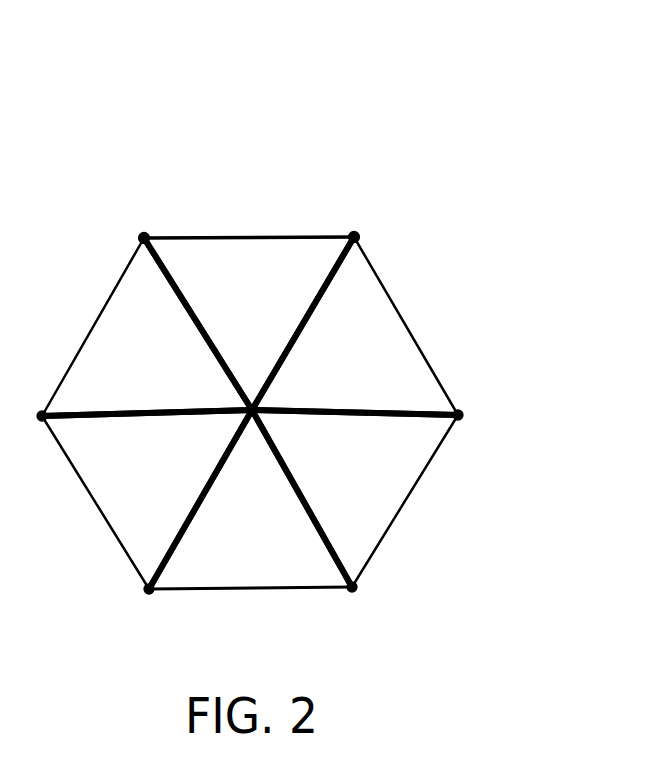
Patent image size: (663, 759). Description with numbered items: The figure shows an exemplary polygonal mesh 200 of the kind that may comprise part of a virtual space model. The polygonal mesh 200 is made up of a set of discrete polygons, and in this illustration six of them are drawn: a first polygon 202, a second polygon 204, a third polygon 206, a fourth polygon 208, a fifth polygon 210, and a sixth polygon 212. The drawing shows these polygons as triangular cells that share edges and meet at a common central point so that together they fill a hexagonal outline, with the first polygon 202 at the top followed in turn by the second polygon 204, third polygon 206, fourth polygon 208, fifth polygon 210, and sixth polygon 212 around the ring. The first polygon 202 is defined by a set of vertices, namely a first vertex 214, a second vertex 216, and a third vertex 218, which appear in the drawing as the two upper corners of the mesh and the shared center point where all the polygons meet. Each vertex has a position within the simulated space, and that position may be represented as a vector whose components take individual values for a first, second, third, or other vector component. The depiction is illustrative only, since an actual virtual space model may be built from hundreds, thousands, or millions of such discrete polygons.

The polygonal mesh 200 is at (466, 72).
The first polygon 202 is at (202, 286).
The second polygon 204 is at (333, 371).
The third polygon 206 is at (333, 484).
The fourth polygon 208 is at (271, 541).
The fifth polygon 210 is at (159, 484).
The sixth polygon 212 is at (158, 369).
The first vertex 214 is at (356, 237).
The second vertex 216 is at (145, 237).
The third vertex 218 is at (253, 405).